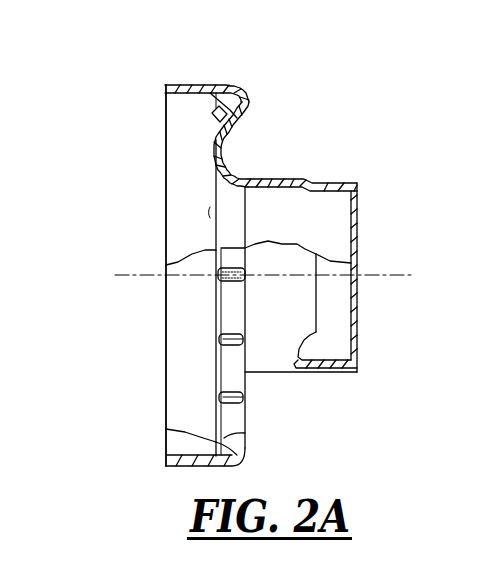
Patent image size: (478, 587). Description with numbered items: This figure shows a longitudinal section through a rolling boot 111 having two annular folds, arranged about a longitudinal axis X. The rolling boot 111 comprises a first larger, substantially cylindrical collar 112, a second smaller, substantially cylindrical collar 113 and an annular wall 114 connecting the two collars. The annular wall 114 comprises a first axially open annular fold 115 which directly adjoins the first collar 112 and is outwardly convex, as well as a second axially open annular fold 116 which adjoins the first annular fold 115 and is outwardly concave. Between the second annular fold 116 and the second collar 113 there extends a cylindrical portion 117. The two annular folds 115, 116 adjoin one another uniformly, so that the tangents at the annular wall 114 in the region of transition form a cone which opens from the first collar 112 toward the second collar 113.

The rolling boot 111 is at (364, 108).
The first collar 112 is at (190, 467).
The second collar 113 is at (334, 372).
The annular wall 114 is at (264, 117).
The first annular fold 115 is at (249, 98).
The second annular fold 116 is at (234, 172).
The cylindrical portion 117 is at (306, 180).
The longitudinal axis X is at (378, 276).